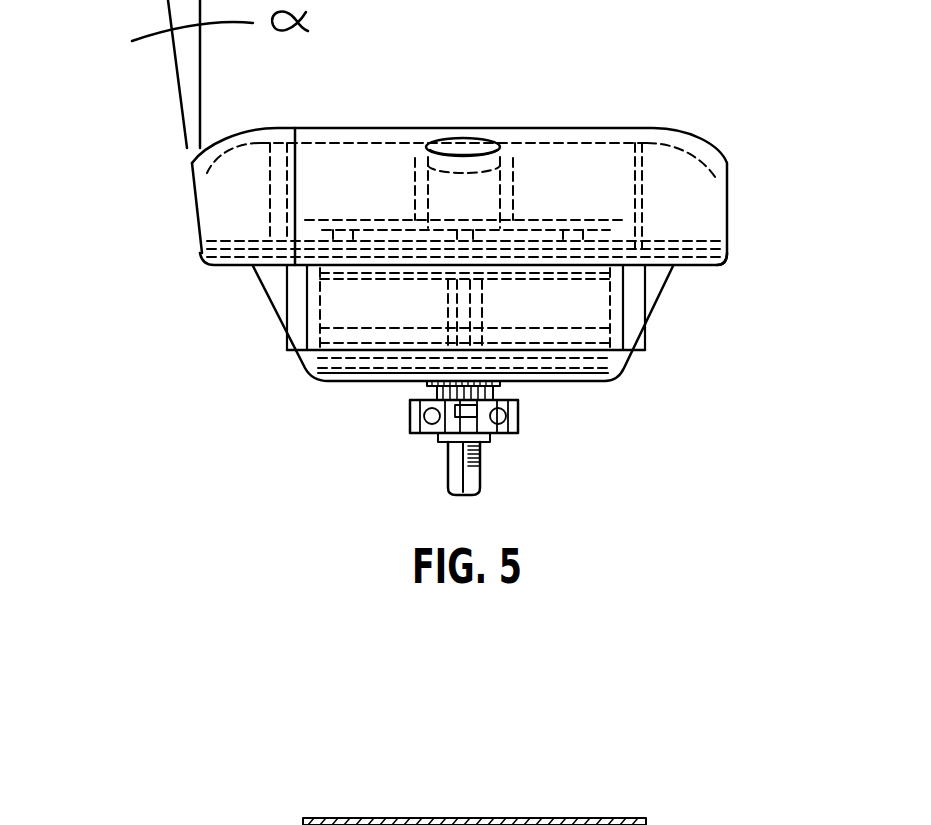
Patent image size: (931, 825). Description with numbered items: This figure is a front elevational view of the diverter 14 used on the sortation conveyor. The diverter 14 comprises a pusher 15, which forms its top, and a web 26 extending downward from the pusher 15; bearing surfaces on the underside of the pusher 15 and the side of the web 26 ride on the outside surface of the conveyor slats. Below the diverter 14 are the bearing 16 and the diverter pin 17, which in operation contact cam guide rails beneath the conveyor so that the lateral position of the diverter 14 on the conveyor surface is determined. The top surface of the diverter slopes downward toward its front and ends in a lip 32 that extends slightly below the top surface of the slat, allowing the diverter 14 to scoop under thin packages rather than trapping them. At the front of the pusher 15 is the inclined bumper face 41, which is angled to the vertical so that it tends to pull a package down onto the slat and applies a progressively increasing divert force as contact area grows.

The diverter 14 is at (178, 322).
The pusher 15 is at (695, 200).
The bearing 16 is at (410, 420).
The diverter pin 17 is at (480, 467).
The web 26 is at (648, 300).
The lip 32 is at (708, 268).
The bumper face 41 is at (197, 205).